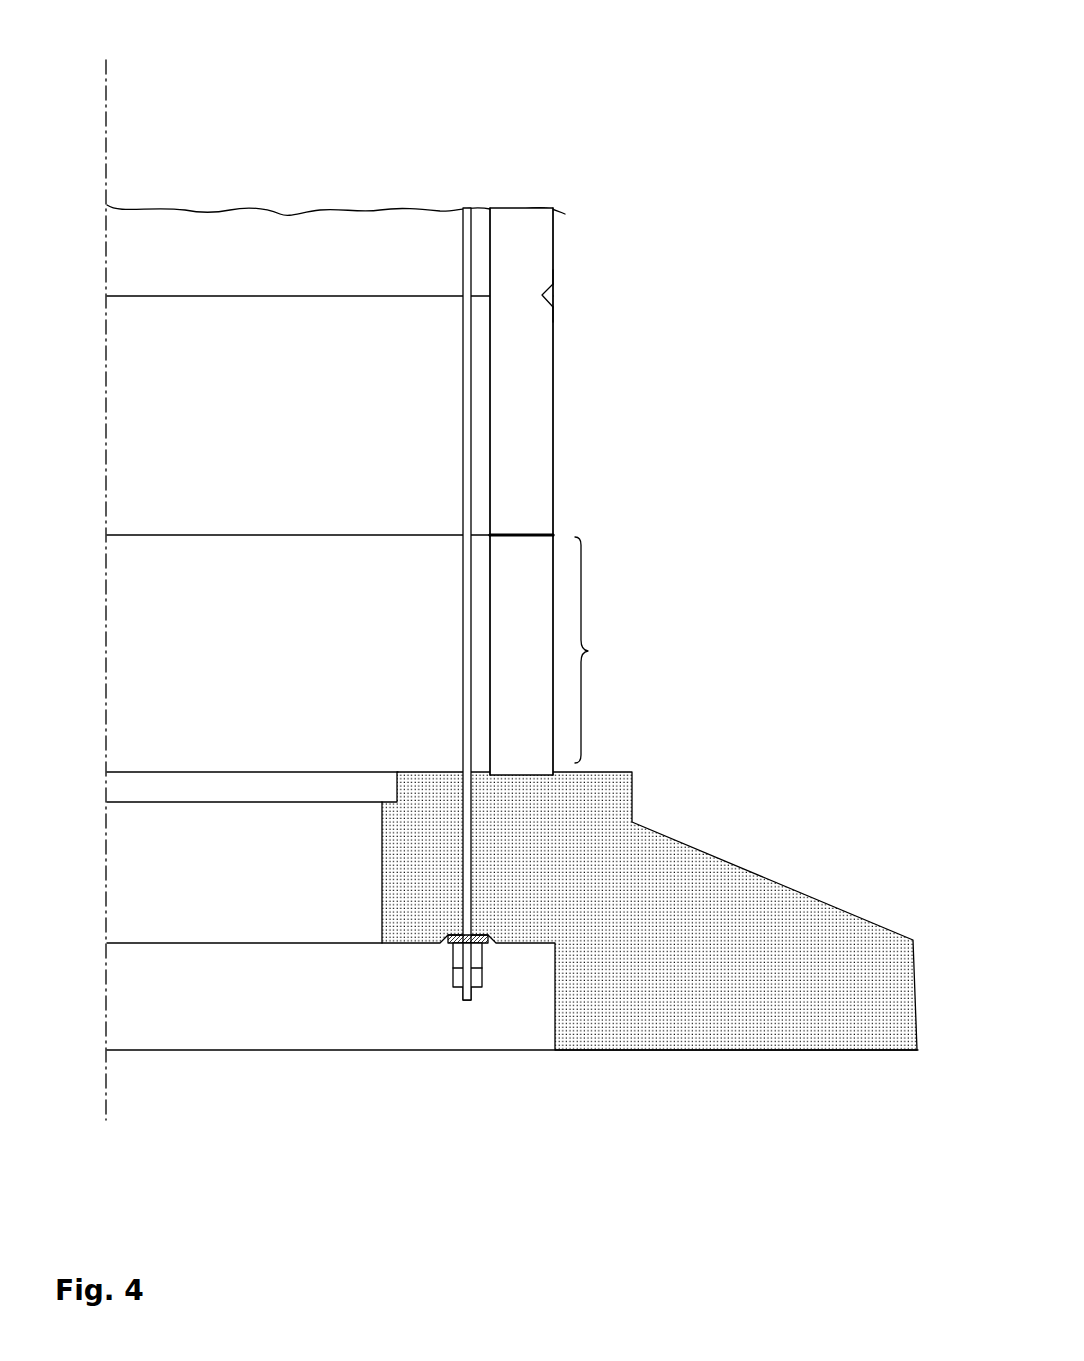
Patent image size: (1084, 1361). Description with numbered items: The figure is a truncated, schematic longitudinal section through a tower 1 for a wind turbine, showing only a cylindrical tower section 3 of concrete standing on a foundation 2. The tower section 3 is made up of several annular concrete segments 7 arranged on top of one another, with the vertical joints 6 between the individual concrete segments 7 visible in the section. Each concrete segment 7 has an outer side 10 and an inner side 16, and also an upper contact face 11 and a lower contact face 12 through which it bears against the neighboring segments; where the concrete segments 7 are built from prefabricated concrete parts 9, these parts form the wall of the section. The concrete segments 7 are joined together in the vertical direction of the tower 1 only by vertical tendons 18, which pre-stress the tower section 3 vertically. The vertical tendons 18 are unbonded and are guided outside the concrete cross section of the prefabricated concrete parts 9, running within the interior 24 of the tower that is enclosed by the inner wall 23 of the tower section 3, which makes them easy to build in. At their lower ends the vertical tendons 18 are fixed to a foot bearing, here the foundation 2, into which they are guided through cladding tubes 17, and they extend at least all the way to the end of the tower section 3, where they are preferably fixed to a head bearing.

The tower 1 is at (720, 148).
The foundation 2 is at (710, 885).
The tower section 3 is at (670, 634).
The vertical joint 6 is at (627, 281).
The concrete segment 7 is at (601, 650).
The prefabricated concrete part 9 is at (551, 423).
The outer side 10 is at (630, 491).
The upper contact face 11 is at (606, 239).
The lower contact face 12 is at (594, 350).
The inner side 16 is at (415, 491).
The cladding tube 17 is at (390, 996).
The vertical tendon 18 is at (410, 543).
The inner wall 23 is at (488, 500).
The interior 24 is at (256, 468).